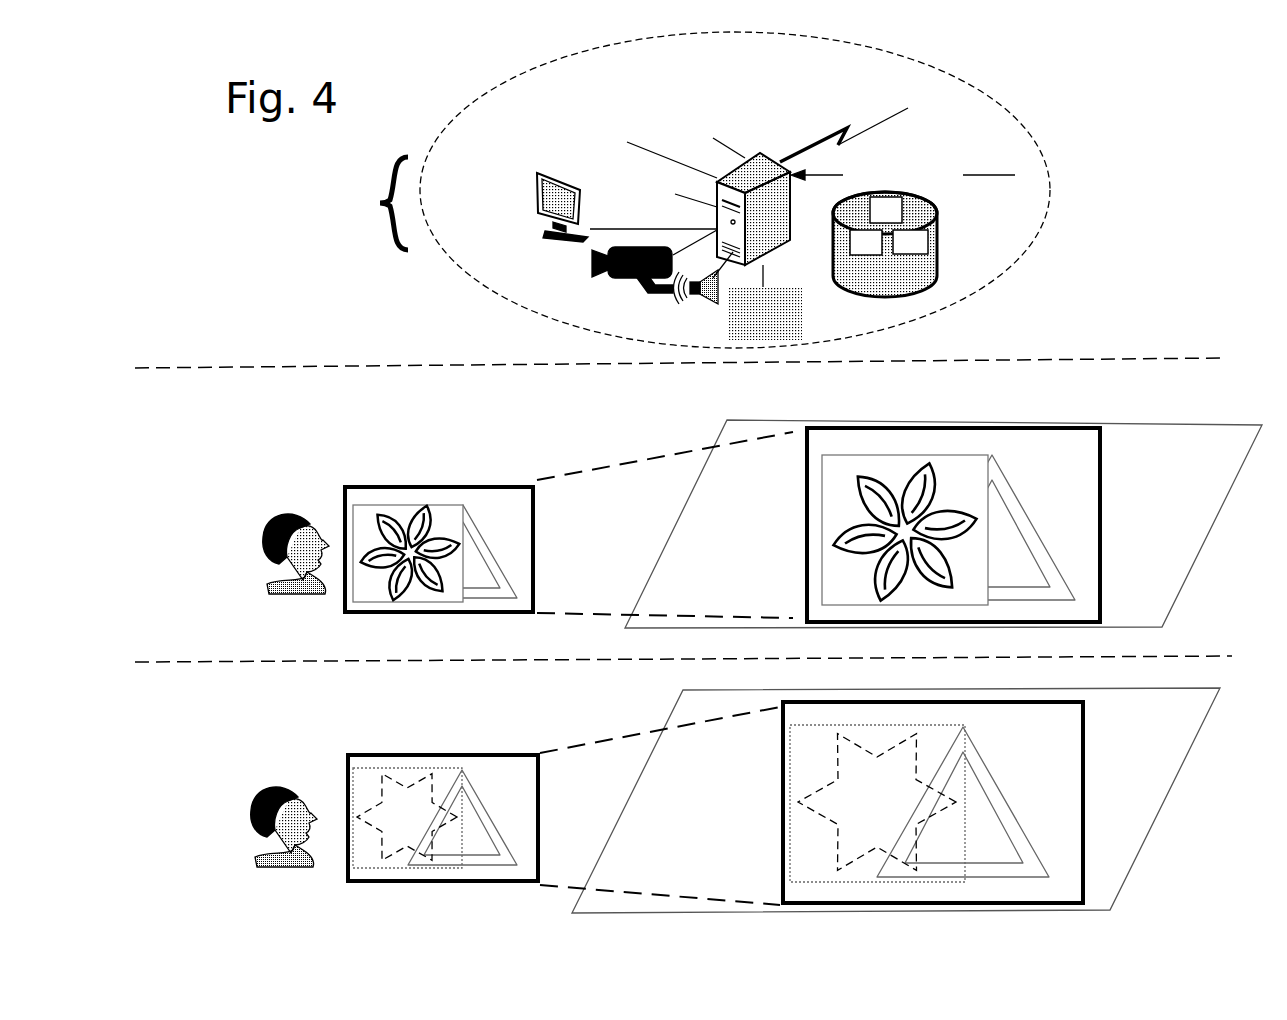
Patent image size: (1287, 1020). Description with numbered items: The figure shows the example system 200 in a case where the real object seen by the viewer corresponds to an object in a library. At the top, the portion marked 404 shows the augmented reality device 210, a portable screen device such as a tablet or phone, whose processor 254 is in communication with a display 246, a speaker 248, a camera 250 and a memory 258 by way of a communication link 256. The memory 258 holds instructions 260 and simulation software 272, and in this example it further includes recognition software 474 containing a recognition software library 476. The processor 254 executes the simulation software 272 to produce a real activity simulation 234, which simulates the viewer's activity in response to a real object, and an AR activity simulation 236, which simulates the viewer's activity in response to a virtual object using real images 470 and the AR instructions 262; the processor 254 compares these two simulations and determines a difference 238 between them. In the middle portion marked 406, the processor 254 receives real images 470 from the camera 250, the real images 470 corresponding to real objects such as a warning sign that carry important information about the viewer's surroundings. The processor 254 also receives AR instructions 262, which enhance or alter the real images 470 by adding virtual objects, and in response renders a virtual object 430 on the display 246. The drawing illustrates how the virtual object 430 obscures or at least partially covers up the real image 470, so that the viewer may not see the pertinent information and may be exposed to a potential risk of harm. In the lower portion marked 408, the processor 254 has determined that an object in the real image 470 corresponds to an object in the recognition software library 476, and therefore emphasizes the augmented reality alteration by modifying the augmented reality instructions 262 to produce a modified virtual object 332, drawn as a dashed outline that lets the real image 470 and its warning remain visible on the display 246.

The system 200 is at (719, 190).
The augmented reality device 210 is at (428, 753).
The real activity simulation 234 is at (622, 105).
The AR activity simulation 236 is at (592, 165).
The difference 238 is at (557, 115).
The display 246 is at (537, 202).
The speaker 248 is at (706, 298).
The camera 250 is at (623, 278).
The processor 254 is at (787, 232).
The communication link 256 is at (818, 137).
The memory 258 is at (911, 262).
The instructions 260 is at (908, 238).
The AR instructions 262 is at (910, 180).
The simulation software 272 is at (866, 242).
The recognition software 474 is at (946, 216).
The recognition software library 476 is at (882, 208).
The memory detail view 404 is at (1060, 193).
The obscured real image view 406 is at (1146, 412).
The modified virtual object view 408 is at (1185, 802).
The real image 470 is at (500, 808).
The virtual object 430 is at (388, 512).
The modified virtual object 332 is at (387, 793).